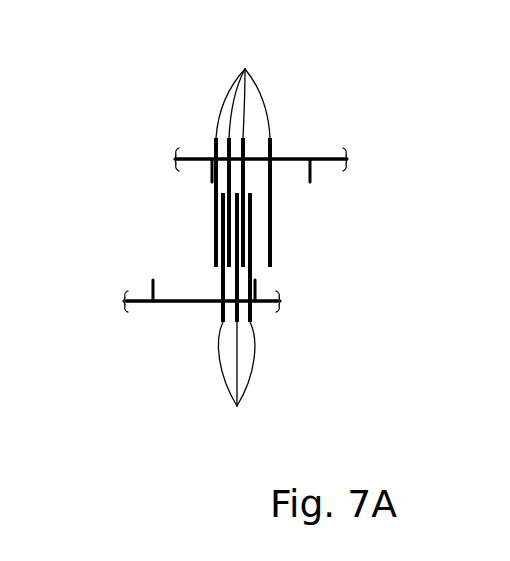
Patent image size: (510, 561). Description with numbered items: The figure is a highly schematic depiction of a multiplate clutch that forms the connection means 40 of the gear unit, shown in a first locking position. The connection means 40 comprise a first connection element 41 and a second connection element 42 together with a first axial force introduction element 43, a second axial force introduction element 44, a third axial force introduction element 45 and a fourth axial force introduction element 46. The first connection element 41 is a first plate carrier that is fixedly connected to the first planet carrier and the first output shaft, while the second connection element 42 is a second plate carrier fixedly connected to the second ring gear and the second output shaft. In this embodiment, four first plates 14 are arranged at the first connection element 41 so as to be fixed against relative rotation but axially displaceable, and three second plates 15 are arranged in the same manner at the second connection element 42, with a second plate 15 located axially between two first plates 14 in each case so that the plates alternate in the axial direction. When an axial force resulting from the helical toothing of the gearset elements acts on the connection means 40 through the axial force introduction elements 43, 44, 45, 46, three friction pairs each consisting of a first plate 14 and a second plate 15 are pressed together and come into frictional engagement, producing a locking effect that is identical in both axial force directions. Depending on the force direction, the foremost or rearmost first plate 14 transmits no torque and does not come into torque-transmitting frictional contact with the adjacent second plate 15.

The connection means 40 is at (183, 133).
The first plate 14 is at (243, 82).
The second plate 15 is at (236, 386).
The first connection element 41 is at (297, 158).
The second connection element 42 is at (188, 303).
The first axial force introduction element 43 is at (210, 172).
The second axial force introduction element 44 is at (312, 173).
The third axial force introduction element 45 is at (152, 292).
The fourth axial force introduction element 46 is at (257, 288).